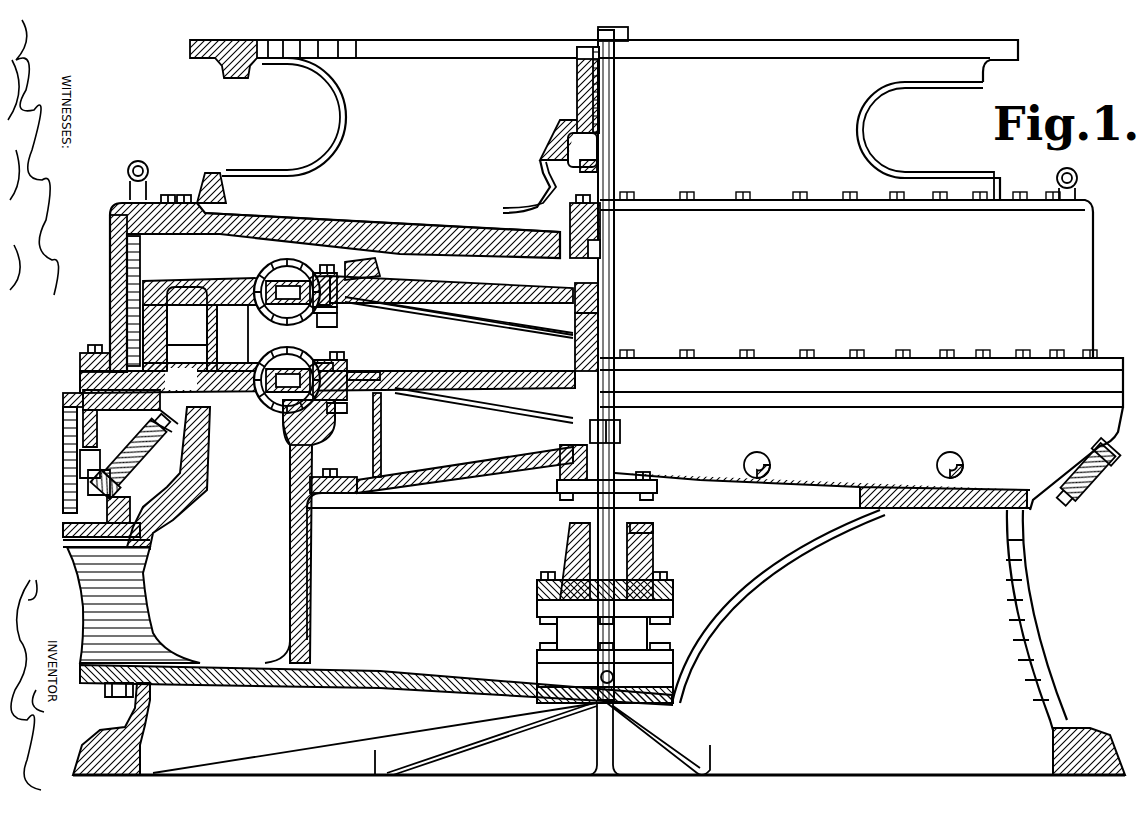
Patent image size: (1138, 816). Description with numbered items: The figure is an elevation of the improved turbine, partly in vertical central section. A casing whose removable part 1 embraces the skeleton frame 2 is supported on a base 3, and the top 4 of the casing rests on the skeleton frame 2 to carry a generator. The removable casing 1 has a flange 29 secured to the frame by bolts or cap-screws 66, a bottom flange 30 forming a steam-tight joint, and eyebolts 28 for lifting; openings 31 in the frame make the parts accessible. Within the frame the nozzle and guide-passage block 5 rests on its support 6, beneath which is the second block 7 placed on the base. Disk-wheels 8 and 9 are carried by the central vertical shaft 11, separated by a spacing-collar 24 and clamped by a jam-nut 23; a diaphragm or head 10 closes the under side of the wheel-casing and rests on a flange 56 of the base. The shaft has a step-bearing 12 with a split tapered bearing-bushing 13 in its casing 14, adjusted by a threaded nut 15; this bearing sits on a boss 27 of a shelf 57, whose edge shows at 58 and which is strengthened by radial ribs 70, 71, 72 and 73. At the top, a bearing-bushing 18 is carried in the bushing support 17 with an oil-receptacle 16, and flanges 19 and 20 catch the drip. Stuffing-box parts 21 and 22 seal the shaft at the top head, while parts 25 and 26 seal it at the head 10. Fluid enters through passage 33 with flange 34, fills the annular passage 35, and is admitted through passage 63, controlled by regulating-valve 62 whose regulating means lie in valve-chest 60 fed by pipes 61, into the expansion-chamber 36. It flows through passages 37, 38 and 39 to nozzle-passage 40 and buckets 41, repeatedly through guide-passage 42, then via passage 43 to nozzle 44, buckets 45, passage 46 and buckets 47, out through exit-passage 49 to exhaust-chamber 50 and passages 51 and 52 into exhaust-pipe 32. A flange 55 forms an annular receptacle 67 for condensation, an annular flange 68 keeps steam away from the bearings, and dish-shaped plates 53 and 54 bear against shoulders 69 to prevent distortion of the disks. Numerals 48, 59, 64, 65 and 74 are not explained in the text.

The removable casing part 1 is at (110, 266).
The skeleton frame 2 is at (272, 216).
The base 3 is at (125, 730).
The top of the casing 4 is at (212, 173).
The nozzle or guide-passage block 5 is at (143, 292).
The nozzle-block support 6 is at (143, 330).
The second nozzle and guide-passage block 7 is at (110, 345).
The disk-wheel 8 is at (470, 293).
The disk-wheel 9 is at (449, 372).
The diaphragm or head 10 is at (442, 470).
The central vertical shaft 11 is at (614, 160).
The step-bearing 12 is at (557, 636).
The tapered bearing-bushing 13 is at (653, 550).
The bearing-bushing casing 14 is at (660, 580).
The threaded nut or collar 15 is at (654, 526).
The oil-receptacle 16 is at (588, 55).
The bearing-bushing support 17 is at (577, 100).
The bearing-bushing 18 is at (600, 90).
The flange 19 is at (600, 140).
The flange 20 is at (600, 170).
The stuffing-box part 21 is at (600, 222).
The stuffing-box part 22 is at (600, 250).
The jam-nut 23 is at (586, 282).
The spacing-collar 24 is at (575, 347).
The stuffing-box part 25 is at (560, 470).
The stuffing-box part 26 is at (575, 495).
The boss 27 is at (545, 674).
The eyebolts 28 is at (128, 173).
The flange 29 is at (114, 205).
The flange 30 is at (80, 360).
The openings 31 is at (140, 262).
The exhaust-pipe 32 is at (63, 535).
The passage 33 is at (63, 447).
The flange 34 is at (75, 400).
The annular passage 35 is at (222, 415).
The expansion-chamber 36 is at (181, 396).
The passage 37 is at (187, 351).
The passage 38 is at (180, 329).
The passage 39 is at (232, 280).
The nozzle-passage 40 is at (270, 268).
The buckets 41 is at (330, 322).
The guide-passage 42 is at (296, 264).
The passage 43 is at (313, 312).
The nozzle 44 is at (300, 410).
The buckets 45 is at (338, 414).
The passage 46 is at (375, 373).
The buckets 47 is at (340, 350).
The bearing support 48 is at (260, 412).
The exit-passage 49 is at (285, 435).
The exhaust-chamber 50 is at (415, 566).
The passage 51 is at (148, 592).
The passage 52 is at (83, 592).
The sheet-metal plate 53 is at (480, 320).
The sheet-metal plate 54 is at (500, 410).
The flange 55 is at (381, 405).
The flange 56 is at (320, 500).
The shelf 57 is at (402, 668).
The edge of the shelf 58 is at (792, 558).
The wall 59 is at (1010, 612).
The valve-chest 60 is at (88, 483).
The pipes 61 is at (80, 460).
The regulating-valve 62 is at (150, 437).
The passage 63 is at (160, 420).
The hole 64 is at (770, 465).
The bolt 65 is at (1025, 352).
The bolts or cap-screws 66 is at (710, 196).
The annular receptacle 67 is at (337, 469).
The annular flange 68 is at (370, 268).
The shoulders 69 is at (398, 308).
The radial rib 70 is at (310, 746).
The radial rib 71 is at (495, 735).
The radial rib 72 is at (597, 750).
The radial rib 73 is at (668, 752).
The hole 74 is at (614, 677).